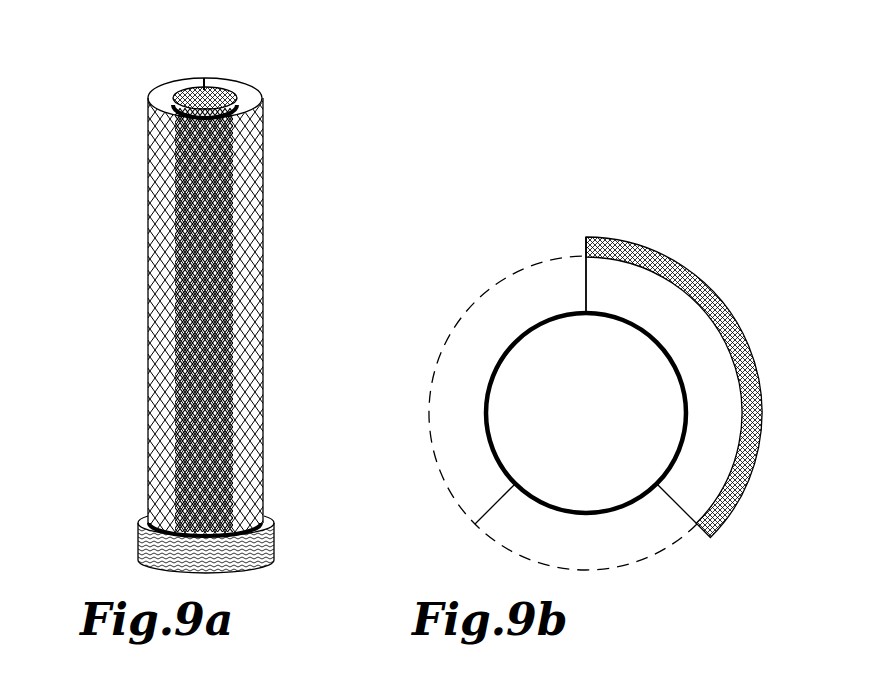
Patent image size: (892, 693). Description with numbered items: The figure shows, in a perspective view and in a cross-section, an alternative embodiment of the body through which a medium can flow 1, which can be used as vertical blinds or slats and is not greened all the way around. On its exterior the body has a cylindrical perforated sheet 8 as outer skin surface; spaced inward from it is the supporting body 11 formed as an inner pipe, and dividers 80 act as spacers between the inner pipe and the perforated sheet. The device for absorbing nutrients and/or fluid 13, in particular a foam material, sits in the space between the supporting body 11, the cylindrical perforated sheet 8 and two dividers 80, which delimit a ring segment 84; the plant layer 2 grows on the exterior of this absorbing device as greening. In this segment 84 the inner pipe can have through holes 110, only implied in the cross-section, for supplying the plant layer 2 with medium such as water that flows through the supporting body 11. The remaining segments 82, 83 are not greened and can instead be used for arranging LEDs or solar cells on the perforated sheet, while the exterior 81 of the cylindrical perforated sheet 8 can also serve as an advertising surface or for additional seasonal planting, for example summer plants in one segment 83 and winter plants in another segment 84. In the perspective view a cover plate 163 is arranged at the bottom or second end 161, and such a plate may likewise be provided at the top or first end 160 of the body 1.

In FIG. 9A, the body through which a medium can flow 1 is at (299, 111).
In FIG. 9B, the body through which a medium can flow 1 is at (688, 188).
In FIG. 9A, the plant layer 2 is at (220, 432).
In FIG. 9B, the plant layer 2 is at (623, 237).
In FIG. 9A, the cylindrical perforated sheet 8 is at (166, 84).
In FIG. 9B, the cylindrical perforated sheet 8 is at (487, 288).
In FIG. 9A, the divider 80 is at (205, 78).
In FIG. 9B, the divider 80 is at (584, 285).
In FIG. 9A, the supporting body 11 is at (230, 83).
In FIG. 9B, the supporting body 11 is at (497, 362).
In FIG. 9B, the device for absorbing nutrients and/or fluid 13 is at (693, 328).
In FIG. 9A, the exterior 81 is at (148, 312).
In FIG. 9B, the exterior 81 is at (468, 516).
In FIG. 9B, the segment 82 is at (465, 446).
In FIG. 9B, the segment 83 is at (640, 537).
In FIG. 9B, the segment 84 is at (702, 475).
In FIG. 9B, the through holes 110 is at (625, 318).
In FIG. 9A, the first end 160 is at (148, 98).
In FIG. 9A, the second end 161 is at (138, 517).
In FIG. 9A, the cover plate 163 is at (146, 545).